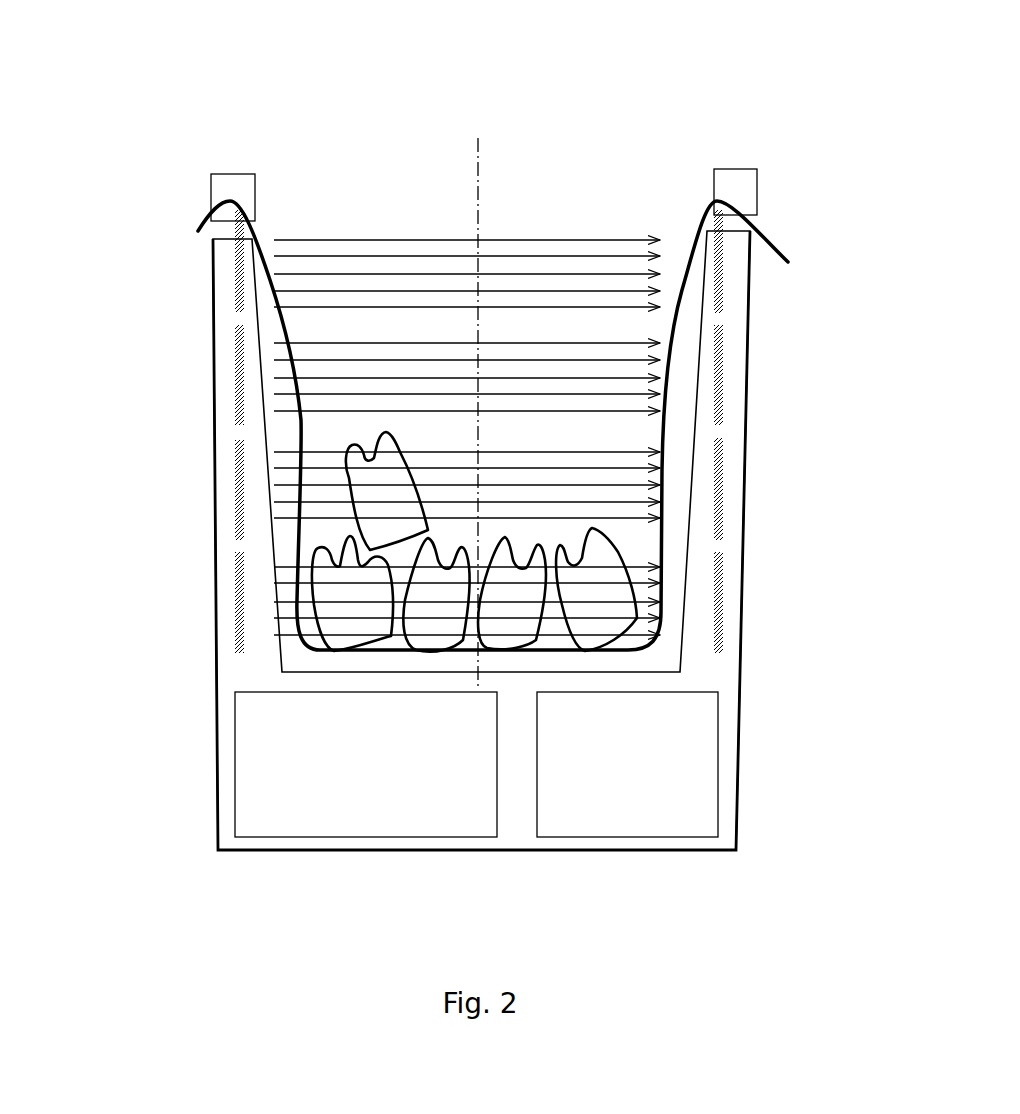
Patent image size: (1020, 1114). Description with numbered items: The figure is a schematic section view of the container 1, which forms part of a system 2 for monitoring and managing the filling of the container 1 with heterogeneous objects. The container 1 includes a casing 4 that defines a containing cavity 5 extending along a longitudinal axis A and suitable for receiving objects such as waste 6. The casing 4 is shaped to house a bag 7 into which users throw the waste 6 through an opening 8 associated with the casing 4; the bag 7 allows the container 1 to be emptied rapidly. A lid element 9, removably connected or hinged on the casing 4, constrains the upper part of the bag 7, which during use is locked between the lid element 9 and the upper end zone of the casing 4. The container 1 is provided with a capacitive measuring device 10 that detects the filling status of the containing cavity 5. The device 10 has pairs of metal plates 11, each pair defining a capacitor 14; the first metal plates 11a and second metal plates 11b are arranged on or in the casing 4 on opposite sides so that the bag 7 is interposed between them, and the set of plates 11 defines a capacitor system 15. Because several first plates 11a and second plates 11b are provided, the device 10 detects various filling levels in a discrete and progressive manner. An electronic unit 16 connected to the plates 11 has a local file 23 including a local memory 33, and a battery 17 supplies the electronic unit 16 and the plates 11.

The container 1 is at (580, 131).
The system 2 is at (142, 63).
The casing 4 is at (218, 572).
The containing cavity 5 is at (630, 219).
The waste 6 is at (640, 622).
The bag 7 is at (664, 440).
The opening 8 is at (385, 146).
The lid element 9 is at (228, 186).
The measuring device 10 is at (153, 683).
The metal plates 11 is at (236, 462).
The first metal plates 11a is at (236, 290).
The second metal plates 11b is at (722, 290).
The capacitor 14 is at (237, 496).
The capacitor system 15 is at (179, 706).
The electronic unit 16 is at (283, 818).
The battery 17 is at (672, 803).
The local file 23 is at (355, 808).
The local memory 33 is at (460, 823).
The longitudinal axis A is at (478, 212).